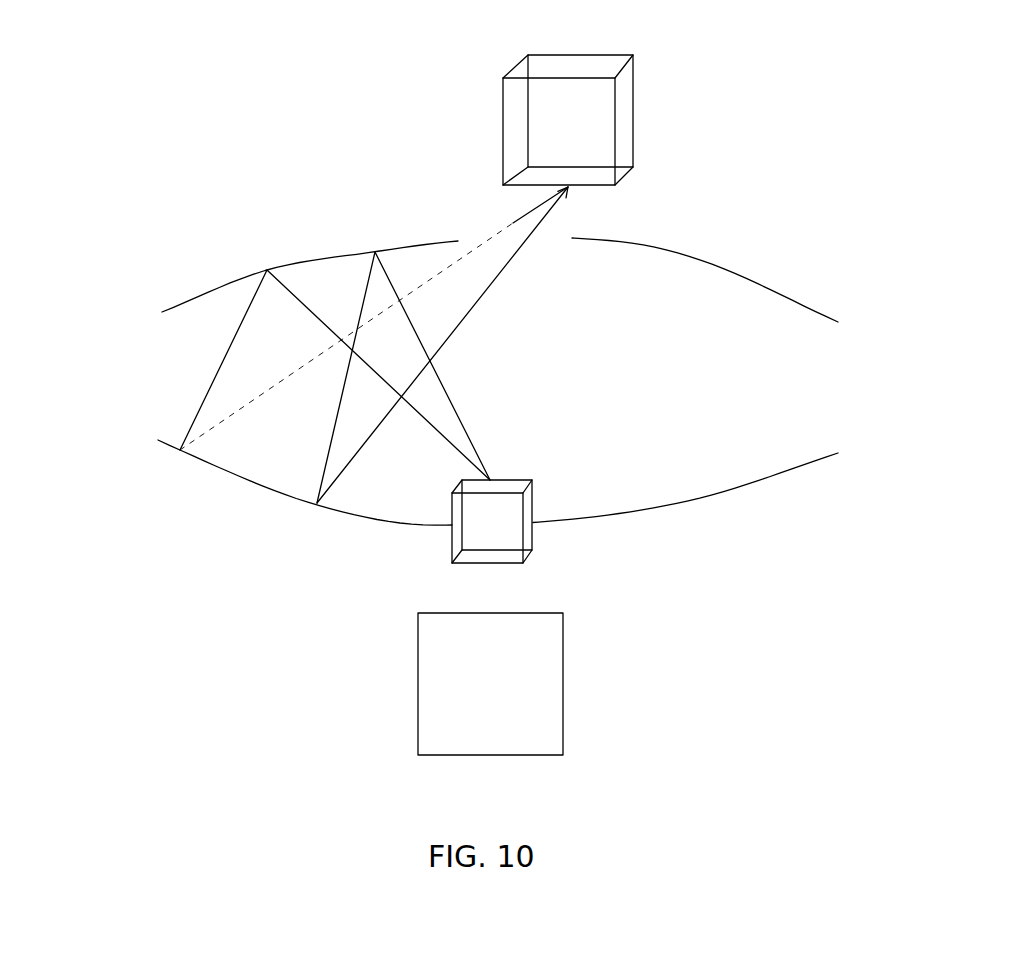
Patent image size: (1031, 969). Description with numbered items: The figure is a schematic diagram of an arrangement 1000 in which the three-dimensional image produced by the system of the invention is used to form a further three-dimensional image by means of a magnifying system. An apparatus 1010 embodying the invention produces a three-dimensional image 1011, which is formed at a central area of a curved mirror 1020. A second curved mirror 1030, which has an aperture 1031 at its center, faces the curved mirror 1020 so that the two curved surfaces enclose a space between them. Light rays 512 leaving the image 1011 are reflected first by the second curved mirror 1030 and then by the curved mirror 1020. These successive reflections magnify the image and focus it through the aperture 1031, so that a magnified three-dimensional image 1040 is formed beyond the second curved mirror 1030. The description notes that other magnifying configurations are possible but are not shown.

The arrangement 1000 is at (263, 127).
The apparatus 1010 is at (490, 684).
The three-dimensional image 1011 is at (537, 557).
The curved mirror 1020 is at (768, 498).
The second curved mirror 1030 is at (815, 285).
The aperture 1031 is at (572, 230).
The magnified three-dimensional image 1040 is at (639, 92).
The light beams 512 is at (435, 410).